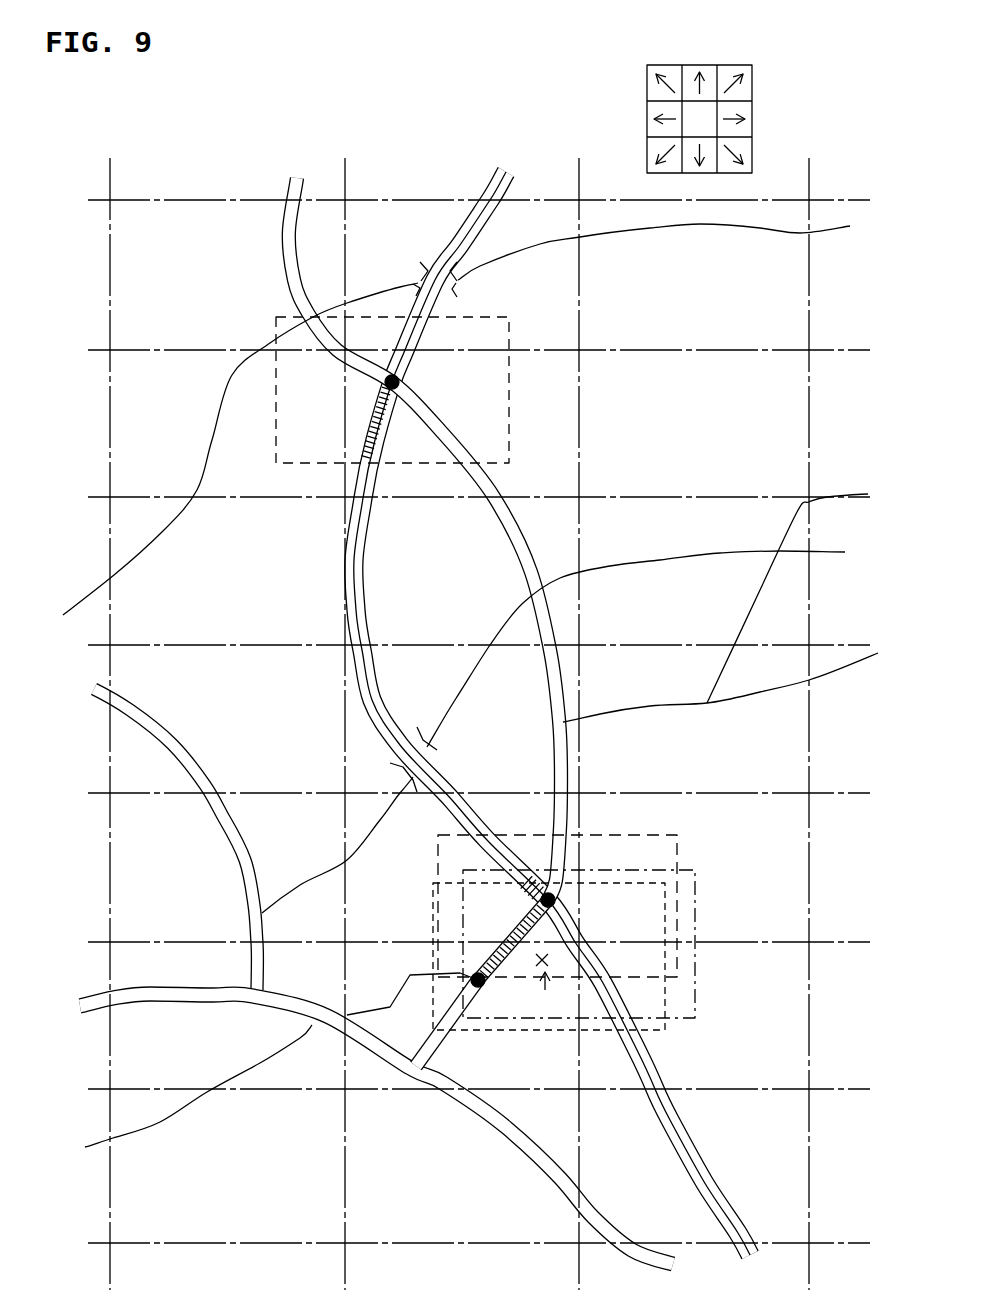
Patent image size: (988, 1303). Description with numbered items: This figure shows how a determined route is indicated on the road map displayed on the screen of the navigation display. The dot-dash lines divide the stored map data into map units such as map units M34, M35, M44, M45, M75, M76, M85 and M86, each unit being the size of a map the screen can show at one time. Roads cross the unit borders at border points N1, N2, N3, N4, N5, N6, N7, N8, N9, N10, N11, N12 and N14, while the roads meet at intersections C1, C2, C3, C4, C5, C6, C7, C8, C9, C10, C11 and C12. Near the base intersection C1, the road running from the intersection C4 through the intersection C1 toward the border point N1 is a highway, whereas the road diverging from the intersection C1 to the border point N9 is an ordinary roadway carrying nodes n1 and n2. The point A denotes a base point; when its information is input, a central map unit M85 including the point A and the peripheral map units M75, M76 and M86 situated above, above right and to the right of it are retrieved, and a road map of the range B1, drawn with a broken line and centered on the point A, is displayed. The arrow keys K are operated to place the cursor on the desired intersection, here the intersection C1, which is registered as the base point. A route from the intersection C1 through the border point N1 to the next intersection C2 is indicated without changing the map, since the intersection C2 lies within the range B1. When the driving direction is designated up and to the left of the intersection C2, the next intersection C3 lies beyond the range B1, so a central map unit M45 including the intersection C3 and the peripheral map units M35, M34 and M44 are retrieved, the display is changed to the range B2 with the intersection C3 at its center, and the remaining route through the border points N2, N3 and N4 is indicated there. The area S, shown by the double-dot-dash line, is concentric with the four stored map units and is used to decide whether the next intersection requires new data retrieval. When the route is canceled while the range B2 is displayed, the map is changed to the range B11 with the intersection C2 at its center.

The arrow keys K is at (732, 65).
The intersection C1 is at (490, 996).
The intersection C2 is at (526, 908).
The intersection C3 is at (414, 387).
The intersection C4 is at (447, 1029).
The intersection C5 is at (205, 1086).
The intersection C6 is at (175, 839).
The intersection C7 is at (339, 838).
The intersection C8 is at (631, 650).
The intersection C9 is at (529, 729).
The intersection C10 is at (787, 598).
The intersection C11 is at (720, 695).
The intersection C12 is at (260, 438).
The border point N1 is at (508, 940).
The border point N2 is at (472, 784).
The border point N3 is at (425, 539).
The border point N4 is at (387, 463).
The border point N5 is at (552, 713).
The border point N6 is at (514, 222).
The border point N7 is at (610, 927).
The border point N8 is at (376, 1129).
The border point N9 is at (364, 997).
The border point N10 is at (689, 1079).
The border point N11 is at (782, 1229).
The border point N12 is at (527, 852).
The border point N14 is at (317, 379).
The node n1 is at (412, 978).
The node n2 is at (400, 1024).
The map unit M34 is at (141, 228).
The map unit M35 is at (568, 316).
The map unit M44 is at (135, 440).
The map unit M45 is at (568, 468).
The map unit M75 is at (356, 836).
The map unit M76 is at (678, 810).
The map unit M85 is at (364, 1076).
The map unit M86 is at (772, 1068).
The range B1 is at (437, 890).
The range B2 is at (509, 390).
The range B11 is at (679, 848).
The area S is at (700, 878).
The base point A is at (542, 988).